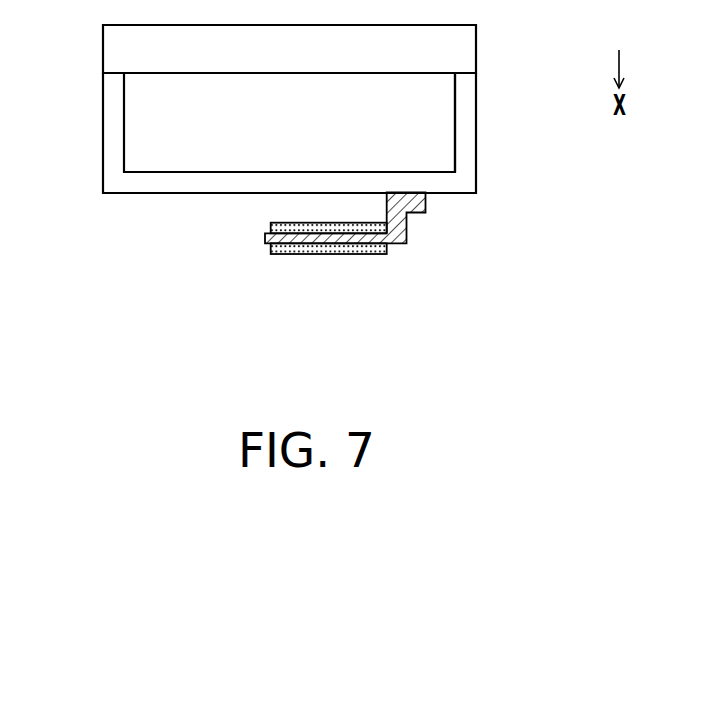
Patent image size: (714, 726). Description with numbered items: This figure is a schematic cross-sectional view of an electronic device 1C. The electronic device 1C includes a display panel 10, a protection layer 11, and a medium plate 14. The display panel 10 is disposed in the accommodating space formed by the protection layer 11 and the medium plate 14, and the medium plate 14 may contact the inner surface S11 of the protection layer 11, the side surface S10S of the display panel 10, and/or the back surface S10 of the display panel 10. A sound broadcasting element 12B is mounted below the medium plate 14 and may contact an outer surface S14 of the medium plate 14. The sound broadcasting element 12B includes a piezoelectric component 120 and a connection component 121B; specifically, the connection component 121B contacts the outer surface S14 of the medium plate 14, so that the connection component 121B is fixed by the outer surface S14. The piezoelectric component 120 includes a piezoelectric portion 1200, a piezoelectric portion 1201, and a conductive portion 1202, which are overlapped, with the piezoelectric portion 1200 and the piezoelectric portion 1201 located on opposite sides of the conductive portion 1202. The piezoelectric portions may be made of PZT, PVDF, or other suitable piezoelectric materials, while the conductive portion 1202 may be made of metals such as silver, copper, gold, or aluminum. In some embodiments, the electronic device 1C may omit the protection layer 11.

The protection layer 11 is at (117, 49).
The display panel 10 is at (160, 147).
The medium plate 14 is at (117, 182).
The inner surface of the protection layer S11 is at (142, 75).
The back surface of the display panel S10 is at (196, 172).
The outer surface of the medium plate S14 is at (125, 193).
The side surface of the display panel S10S is at (456, 122).
The sound broadcasting element 12B is at (371, 292).
The piezoelectric component 120 is at (339, 285).
The piezoelectric portion 1200 is at (365, 230).
The piezoelectric portion 1201 is at (320, 275).
The conductive portion 1202 is at (337, 240).
The connection component 121B is at (402, 220).
The electronic device 1C is at (582, 357).